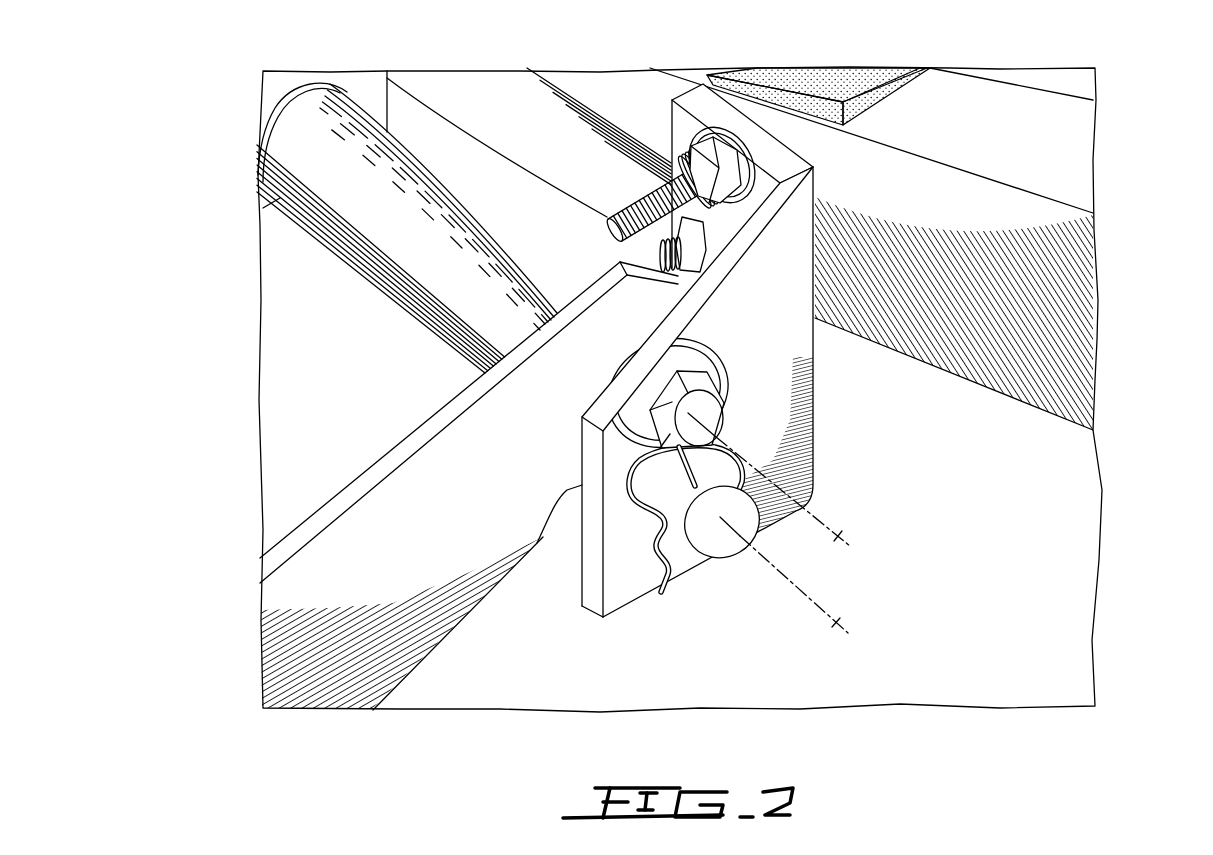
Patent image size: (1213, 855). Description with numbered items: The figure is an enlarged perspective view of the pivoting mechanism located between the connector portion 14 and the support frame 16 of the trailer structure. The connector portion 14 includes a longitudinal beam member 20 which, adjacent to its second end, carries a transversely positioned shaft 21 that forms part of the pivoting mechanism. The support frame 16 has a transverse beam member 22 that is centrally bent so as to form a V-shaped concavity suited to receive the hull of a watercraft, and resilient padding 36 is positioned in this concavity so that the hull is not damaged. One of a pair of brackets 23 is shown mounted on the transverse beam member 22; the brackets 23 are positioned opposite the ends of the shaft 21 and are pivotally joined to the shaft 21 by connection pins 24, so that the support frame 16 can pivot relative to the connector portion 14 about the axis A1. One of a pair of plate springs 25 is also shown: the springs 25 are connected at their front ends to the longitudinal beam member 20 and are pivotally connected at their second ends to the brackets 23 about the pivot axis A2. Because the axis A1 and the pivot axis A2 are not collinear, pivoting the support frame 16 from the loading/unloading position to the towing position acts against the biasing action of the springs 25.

The connector portion 14 is at (278, 478).
The support frame 16 is at (1056, 142).
The longitudinal beam member 20 is at (274, 83).
The shaft 21 is at (328, 177).
The transverse beam member 22 is at (1005, 212).
The bracket 23 is at (777, 350).
The connection pin 24 is at (723, 520).
The spring 25 is at (413, 560).
The resilient padding 36 is at (878, 92).
The axis A1 is at (838, 618).
The pivot axis A2 is at (840, 530).